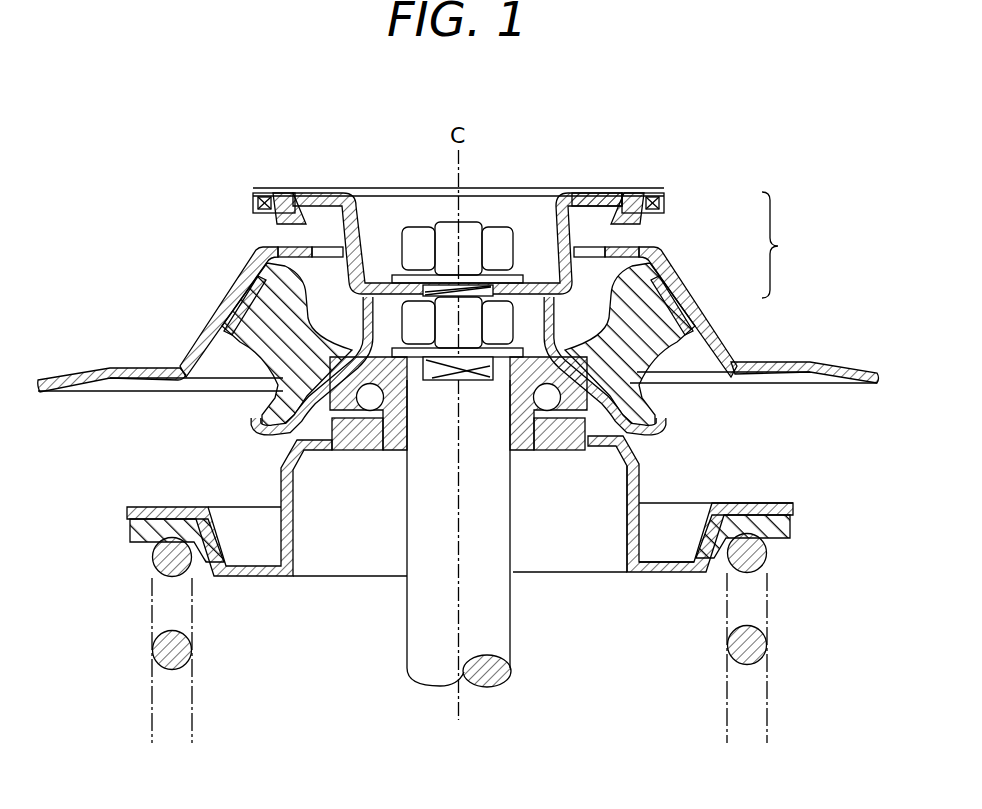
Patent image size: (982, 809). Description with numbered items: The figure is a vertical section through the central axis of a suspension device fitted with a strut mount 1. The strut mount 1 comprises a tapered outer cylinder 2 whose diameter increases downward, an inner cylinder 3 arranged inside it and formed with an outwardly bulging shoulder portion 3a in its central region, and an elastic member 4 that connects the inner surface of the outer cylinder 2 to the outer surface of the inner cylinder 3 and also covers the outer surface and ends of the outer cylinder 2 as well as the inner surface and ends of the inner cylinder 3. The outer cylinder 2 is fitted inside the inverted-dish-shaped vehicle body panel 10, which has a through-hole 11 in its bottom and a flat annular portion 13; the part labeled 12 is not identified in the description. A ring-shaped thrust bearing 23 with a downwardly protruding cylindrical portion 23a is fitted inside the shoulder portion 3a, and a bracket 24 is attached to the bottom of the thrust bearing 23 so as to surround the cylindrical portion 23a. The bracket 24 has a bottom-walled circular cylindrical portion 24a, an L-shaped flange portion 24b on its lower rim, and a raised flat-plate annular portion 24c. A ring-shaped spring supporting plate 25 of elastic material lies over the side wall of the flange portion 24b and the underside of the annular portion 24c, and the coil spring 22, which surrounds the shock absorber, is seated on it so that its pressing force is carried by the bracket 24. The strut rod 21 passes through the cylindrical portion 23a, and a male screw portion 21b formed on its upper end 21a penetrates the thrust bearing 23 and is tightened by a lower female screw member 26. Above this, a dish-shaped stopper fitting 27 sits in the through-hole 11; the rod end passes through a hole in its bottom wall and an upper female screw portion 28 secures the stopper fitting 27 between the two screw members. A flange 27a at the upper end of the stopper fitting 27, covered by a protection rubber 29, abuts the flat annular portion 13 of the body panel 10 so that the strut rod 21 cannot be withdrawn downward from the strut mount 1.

The strut mount 1 is at (480, 311).
The outer cylinder 2 is at (673, 265).
The inner cylinder 3 is at (625, 408).
The shoulder portion 3a is at (232, 300).
The elastic member 4 is at (645, 245).
The vehicle body panel 10 is at (817, 359).
The through-hole 11 is at (345, 190).
The body side bracket 12 is at (218, 308).
The flat annular portion 13 is at (633, 188).
The strut rod 21 is at (520, 638).
The upper end 21a is at (470, 397).
The male screw portion 21b is at (447, 372).
The coil spring 22 is at (774, 644).
The thrust bearing 23 is at (350, 422).
The cylindrical portion 23a is at (390, 452).
The bracket 24 is at (673, 479).
The circular cylindrical portion 24a is at (628, 512).
The flange portion 24b is at (660, 575).
The flat-plate annular portion 24c is at (770, 503).
The spring supporting plate 25 is at (712, 559).
The lower female screw member 26 is at (500, 312).
The stopper fitting 27 is at (322, 188).
The flange 27a is at (590, 190).
The upper female screw portion 28 is at (417, 232).
The protection rubber 29 is at (277, 222).